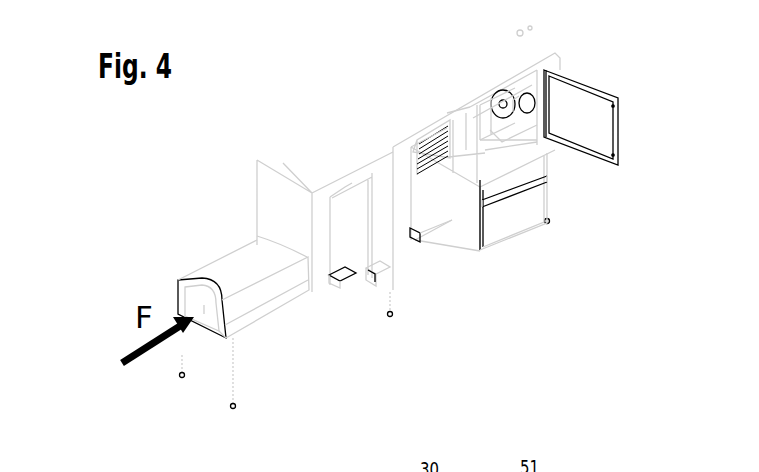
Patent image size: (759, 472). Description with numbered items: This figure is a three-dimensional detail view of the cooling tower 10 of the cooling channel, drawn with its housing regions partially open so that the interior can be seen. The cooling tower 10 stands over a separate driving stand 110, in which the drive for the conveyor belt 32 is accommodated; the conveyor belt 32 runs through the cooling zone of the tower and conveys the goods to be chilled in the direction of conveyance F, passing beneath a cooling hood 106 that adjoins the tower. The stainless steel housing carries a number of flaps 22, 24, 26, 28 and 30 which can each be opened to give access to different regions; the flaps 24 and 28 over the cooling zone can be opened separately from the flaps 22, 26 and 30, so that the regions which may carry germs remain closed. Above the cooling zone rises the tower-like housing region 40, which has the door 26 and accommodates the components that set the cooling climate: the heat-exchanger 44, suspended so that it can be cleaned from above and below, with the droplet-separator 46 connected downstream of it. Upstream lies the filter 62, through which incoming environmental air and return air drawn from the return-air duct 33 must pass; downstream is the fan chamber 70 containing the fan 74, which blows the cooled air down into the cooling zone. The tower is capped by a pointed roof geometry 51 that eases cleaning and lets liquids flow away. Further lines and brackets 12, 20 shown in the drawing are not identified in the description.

The cooling tower 10 is at (228, 188).
The base frame 12 is at (200, 333).
The housing 20 is at (253, 306).
The flap 22 is at (368, 283).
The flap 24 is at (330, 283).
The flap 26 is at (473, 230).
The flap 28 is at (410, 230).
The flap 30 is at (610, 132).
The conveyor belt 32 is at (190, 303).
The return-air duct 33 is at (204, 304).
The housing region 40 is at (472, 55).
The heat-exchanger 44 is at (435, 148).
The droplet-separator 46 is at (470, 123).
The roof geometry 51 is at (535, 38).
The filter 62 is at (367, 173).
The fan chamber 70 is at (502, 142).
The fan 74 is at (513, 112).
The cooling hood 106 is at (220, 261).
The driving stand 110 is at (523, 217).